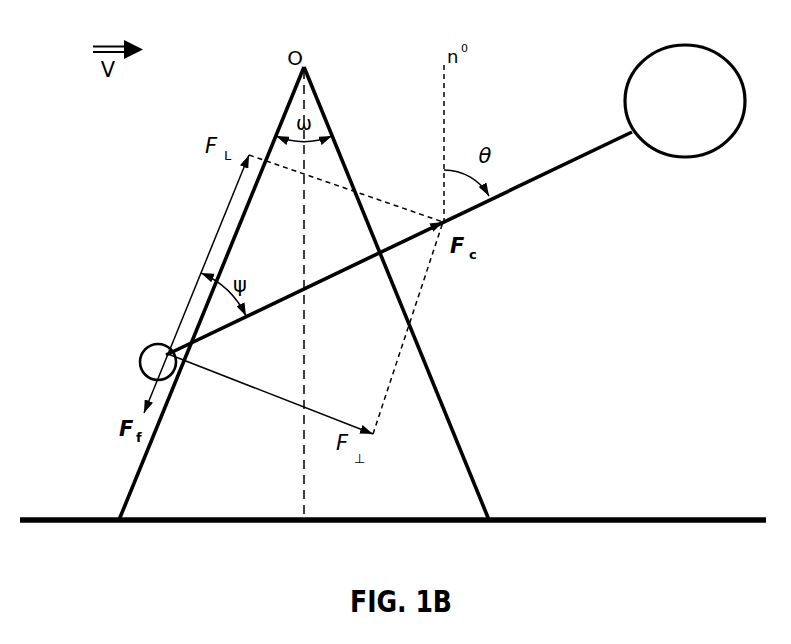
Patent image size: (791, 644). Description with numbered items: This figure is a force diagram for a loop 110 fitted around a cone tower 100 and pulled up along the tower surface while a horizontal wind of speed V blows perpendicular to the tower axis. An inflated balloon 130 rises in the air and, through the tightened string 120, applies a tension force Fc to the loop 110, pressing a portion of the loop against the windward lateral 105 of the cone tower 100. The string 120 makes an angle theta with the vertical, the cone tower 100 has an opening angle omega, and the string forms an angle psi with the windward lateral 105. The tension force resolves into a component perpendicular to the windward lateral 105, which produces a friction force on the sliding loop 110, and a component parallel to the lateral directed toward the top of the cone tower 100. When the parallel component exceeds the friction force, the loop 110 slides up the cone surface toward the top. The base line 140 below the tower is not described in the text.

The cone tower 100 is at (410, 502).
The windward lateral 105 is at (138, 472).
The loop 110 is at (151, 348).
The string 120 is at (563, 172).
The balloon 130 is at (663, 97).
The ground surface 140 is at (615, 510).